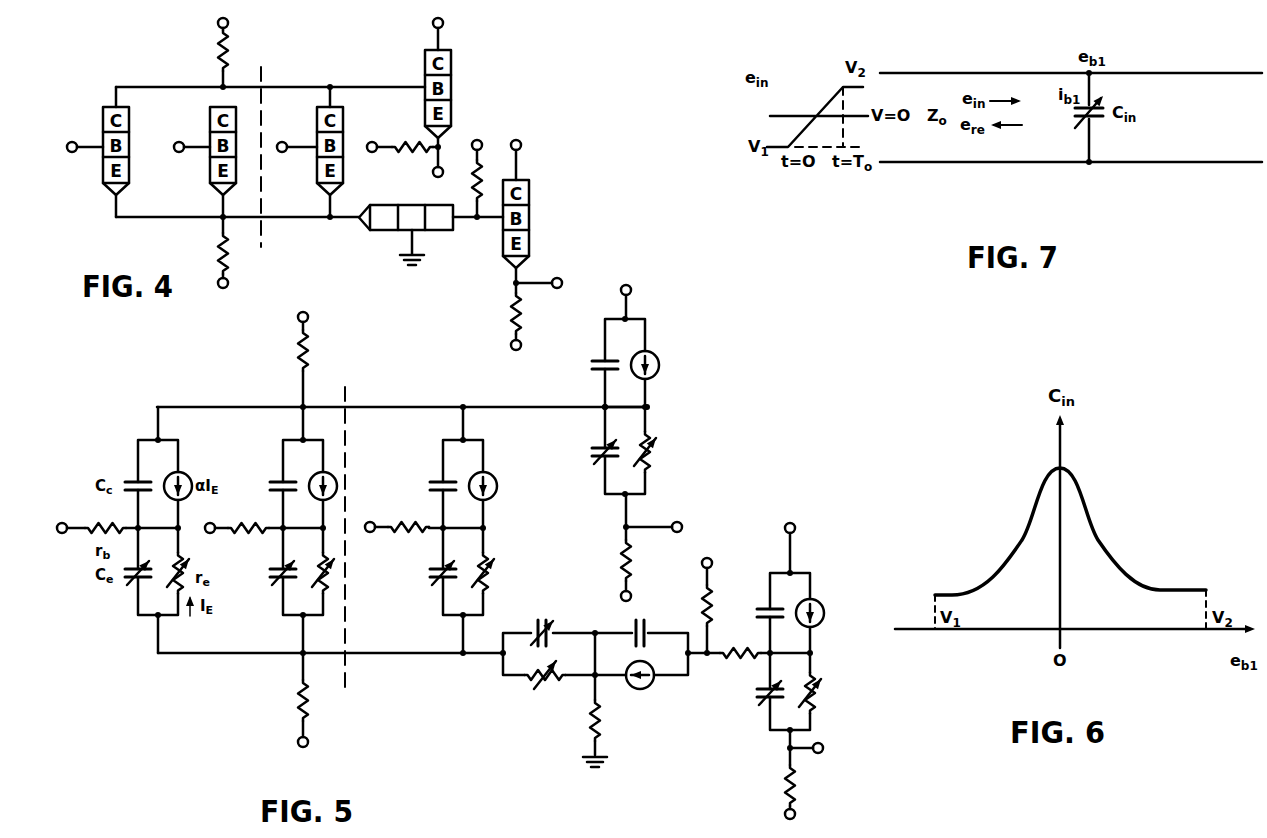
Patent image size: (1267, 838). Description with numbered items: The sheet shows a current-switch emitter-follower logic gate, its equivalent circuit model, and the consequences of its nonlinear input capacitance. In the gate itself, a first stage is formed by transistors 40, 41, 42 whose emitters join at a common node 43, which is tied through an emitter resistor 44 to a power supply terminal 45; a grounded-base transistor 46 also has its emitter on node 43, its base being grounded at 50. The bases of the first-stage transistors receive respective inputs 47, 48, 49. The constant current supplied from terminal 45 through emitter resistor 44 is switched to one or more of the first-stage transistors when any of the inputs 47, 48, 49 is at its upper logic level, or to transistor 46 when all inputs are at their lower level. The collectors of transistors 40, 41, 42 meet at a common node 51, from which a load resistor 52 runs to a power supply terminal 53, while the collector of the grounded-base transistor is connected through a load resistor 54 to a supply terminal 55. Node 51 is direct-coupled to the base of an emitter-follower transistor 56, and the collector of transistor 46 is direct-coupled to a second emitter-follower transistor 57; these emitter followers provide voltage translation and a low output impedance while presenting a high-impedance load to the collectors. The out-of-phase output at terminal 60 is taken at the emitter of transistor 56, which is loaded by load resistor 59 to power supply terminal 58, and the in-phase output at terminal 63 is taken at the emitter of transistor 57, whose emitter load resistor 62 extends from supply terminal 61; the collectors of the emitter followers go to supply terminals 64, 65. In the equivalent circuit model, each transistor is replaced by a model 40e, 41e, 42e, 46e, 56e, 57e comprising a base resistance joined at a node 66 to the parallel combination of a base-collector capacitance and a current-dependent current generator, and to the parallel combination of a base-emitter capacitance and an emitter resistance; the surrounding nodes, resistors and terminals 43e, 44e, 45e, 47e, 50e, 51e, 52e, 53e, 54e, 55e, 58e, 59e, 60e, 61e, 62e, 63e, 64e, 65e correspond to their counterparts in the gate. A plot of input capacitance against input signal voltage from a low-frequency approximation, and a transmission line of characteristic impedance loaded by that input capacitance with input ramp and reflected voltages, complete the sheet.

In FIG. 4, the transistor 40 is at (93, 133).
In FIG. 4, the transistor 41 is at (203, 133).
In FIG. 4, the transistor 42 is at (314, 133).
In FIG. 4, the common node 43 is at (221, 220).
In FIG. 4, the emitter resistor 44 is at (228, 250).
In FIG. 4, the power supply terminal 45 is at (217, 283).
In FIG. 4, the transistor 46 is at (396, 242).
In FIG. 4, the input 47 is at (70, 153).
In FIG. 4, the input 48 is at (179, 153).
In FIG. 4, the input 49 is at (283, 153).
In FIG. 4, the ground 50 is at (418, 250).
In FIG. 4, the common node 51 is at (220, 85).
In FIG. 4, the load resistor 52 is at (229, 46).
In FIG. 4, the power supply terminal 53 is at (227, 25).
In FIG. 4, the load resistor 54 is at (467, 183).
In FIG. 4, the supply terminal 55 is at (477, 140).
In FIG. 4, the emitter-follower transistor 56 is at (465, 82).
In FIG. 4, the second emitter-follower transistor 57 is at (544, 211).
In FIG. 4, the power supply terminal 58 is at (373, 153).
In FIG. 4, the load resistor 59 is at (408, 141).
In FIG. 4, the terminal 60 is at (432, 172).
In FIG. 4, the supply terminal 61 is at (511, 345).
In FIG. 4, the emitter load resistor 62 is at (512, 312).
In FIG. 4, the terminal 63 is at (561, 278).
In FIG. 4, the supply terminal 64 is at (444, 25).
In FIG. 4, the supply terminal 65 is at (516, 140).
In FIG. 5, the node 66 is at (122, 524).
In FIG. 5, the equivalent circuit of transistor 40 40e is at (106, 470).
In FIG. 5, the equivalent circuit of transistor 41 41e is at (254, 473).
In FIG. 5, the equivalent circuit of transistor 42 42e is at (410, 474).
In FIG. 5, the common node 43e is at (300, 660).
In FIG. 5, the emitter resistor 44e is at (300, 695).
In FIG. 5, the power supply terminal 45e is at (309, 742).
In FIG. 5, the equivalent circuit of transistor 46 46e is at (574, 690).
In FIG. 5, the input 47e is at (60, 533).
In FIG. 5, the ground 50e is at (598, 740).
In FIG. 5, the common node 51e is at (300, 405).
In FIG. 5, the load resistor 52e is at (299, 352).
In FIG. 5, the power supply terminal 53e is at (308, 317).
In FIG. 5, the load resistor 54e is at (712, 598).
In FIG. 5, the supply terminal 55e is at (707, 557).
In FIG. 5, the equivalent circuit of emitter-follower transistor 56 56e is at (670, 410).
In FIG. 5, the equivalent circuit of emitter-follower transistor 57 57e is at (827, 600).
In FIG. 5, the power supply terminal 58e is at (620, 596).
In FIG. 5, the load resistor 59e is at (620, 548).
In FIG. 5, the terminal 60e is at (676, 521).
In FIG. 5, the supply terminal 61e is at (796, 814).
In FIG. 5, the emitter load resistor 62e is at (786, 782).
In FIG. 5, the terminal 63e is at (822, 746).
In FIG. 5, the supply terminal 64e is at (635, 278).
In FIG. 5, the supply terminal 65e is at (810, 520).